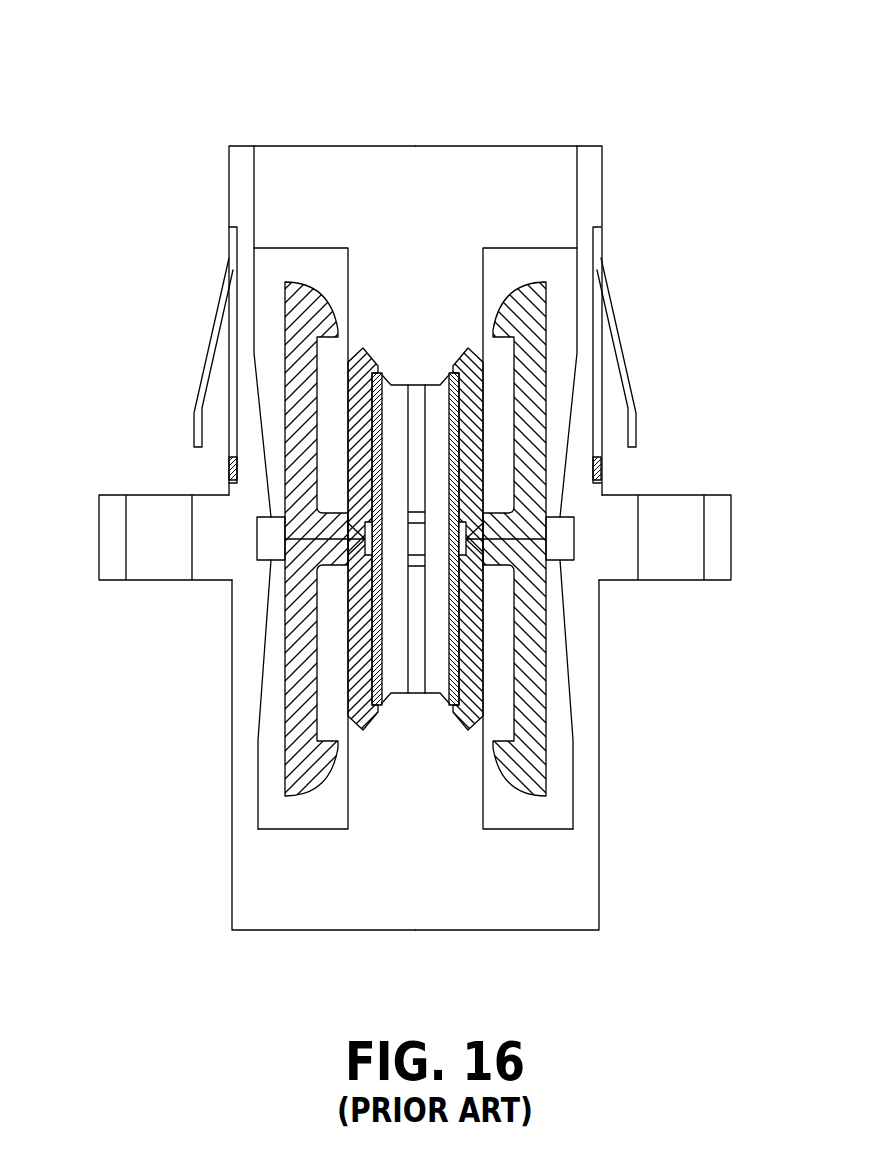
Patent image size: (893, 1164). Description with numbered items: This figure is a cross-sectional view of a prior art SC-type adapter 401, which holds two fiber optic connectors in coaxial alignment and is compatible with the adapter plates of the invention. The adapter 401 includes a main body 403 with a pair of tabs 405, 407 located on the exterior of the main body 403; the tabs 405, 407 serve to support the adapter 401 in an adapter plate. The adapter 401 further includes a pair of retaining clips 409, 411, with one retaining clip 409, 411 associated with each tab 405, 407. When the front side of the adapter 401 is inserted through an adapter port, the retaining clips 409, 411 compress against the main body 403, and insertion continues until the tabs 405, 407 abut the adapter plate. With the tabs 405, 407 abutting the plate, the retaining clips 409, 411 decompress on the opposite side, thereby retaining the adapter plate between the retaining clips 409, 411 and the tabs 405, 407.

The SC-type adapter 401 is at (641, 82).
The main body 403 is at (601, 197).
The tab 405 is at (718, 495).
The tab 407 is at (108, 495).
The retaining clip 409 is at (626, 368).
The retaining clip 411 is at (203, 365).